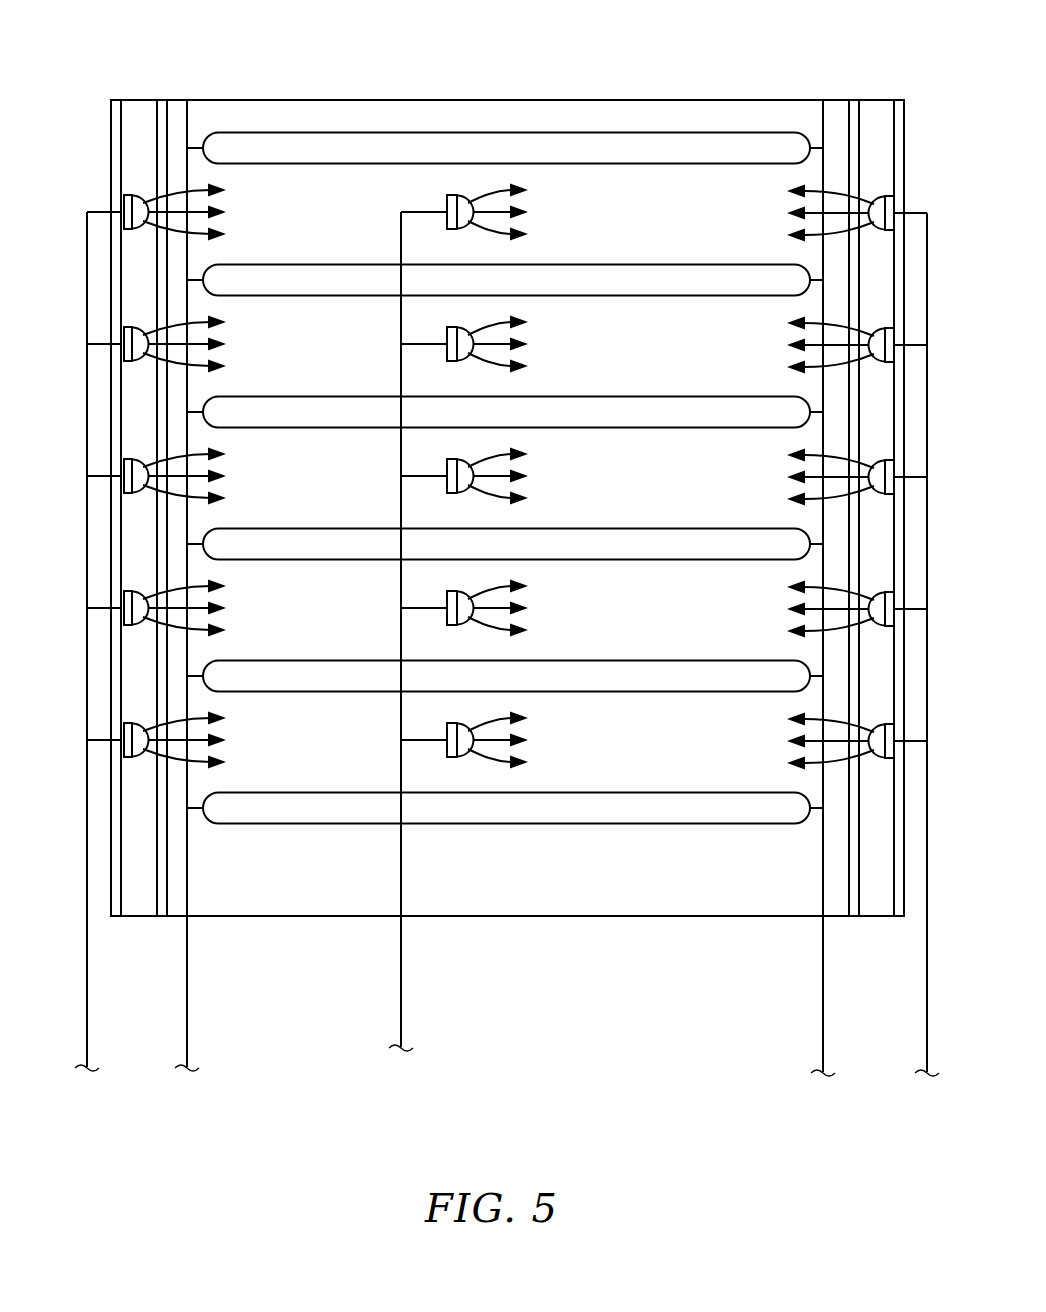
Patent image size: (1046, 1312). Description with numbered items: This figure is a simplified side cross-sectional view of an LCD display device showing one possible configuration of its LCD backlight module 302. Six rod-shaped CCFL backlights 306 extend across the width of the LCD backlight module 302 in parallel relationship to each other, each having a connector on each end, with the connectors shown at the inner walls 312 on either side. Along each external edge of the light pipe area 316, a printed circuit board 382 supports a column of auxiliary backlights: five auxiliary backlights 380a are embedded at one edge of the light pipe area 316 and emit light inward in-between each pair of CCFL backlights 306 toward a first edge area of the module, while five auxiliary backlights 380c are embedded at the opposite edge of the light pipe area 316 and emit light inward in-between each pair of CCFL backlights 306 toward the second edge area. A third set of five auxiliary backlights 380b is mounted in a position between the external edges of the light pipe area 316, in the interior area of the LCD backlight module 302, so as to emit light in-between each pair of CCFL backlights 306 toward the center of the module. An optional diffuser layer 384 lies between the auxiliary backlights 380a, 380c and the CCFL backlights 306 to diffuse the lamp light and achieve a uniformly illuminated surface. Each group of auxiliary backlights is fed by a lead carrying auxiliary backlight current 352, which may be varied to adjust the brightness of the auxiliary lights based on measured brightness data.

The LCD backlight module 302 is at (609, 100).
The CCFL backlights 306 is at (675, 150).
The inner wall / conductor 312 is at (188, 1010).
The light pipe area 316 is at (137, 104).
The auxiliary backlight current 352 is at (88, 1010).
The auxiliary backlights 380a is at (124, 195).
The auxiliary backlights 380b is at (447, 204).
The auxiliary backlights 380c is at (885, 196).
The printed circuit board 382 is at (115, 100).
The diffuser layer 384 is at (162, 101).